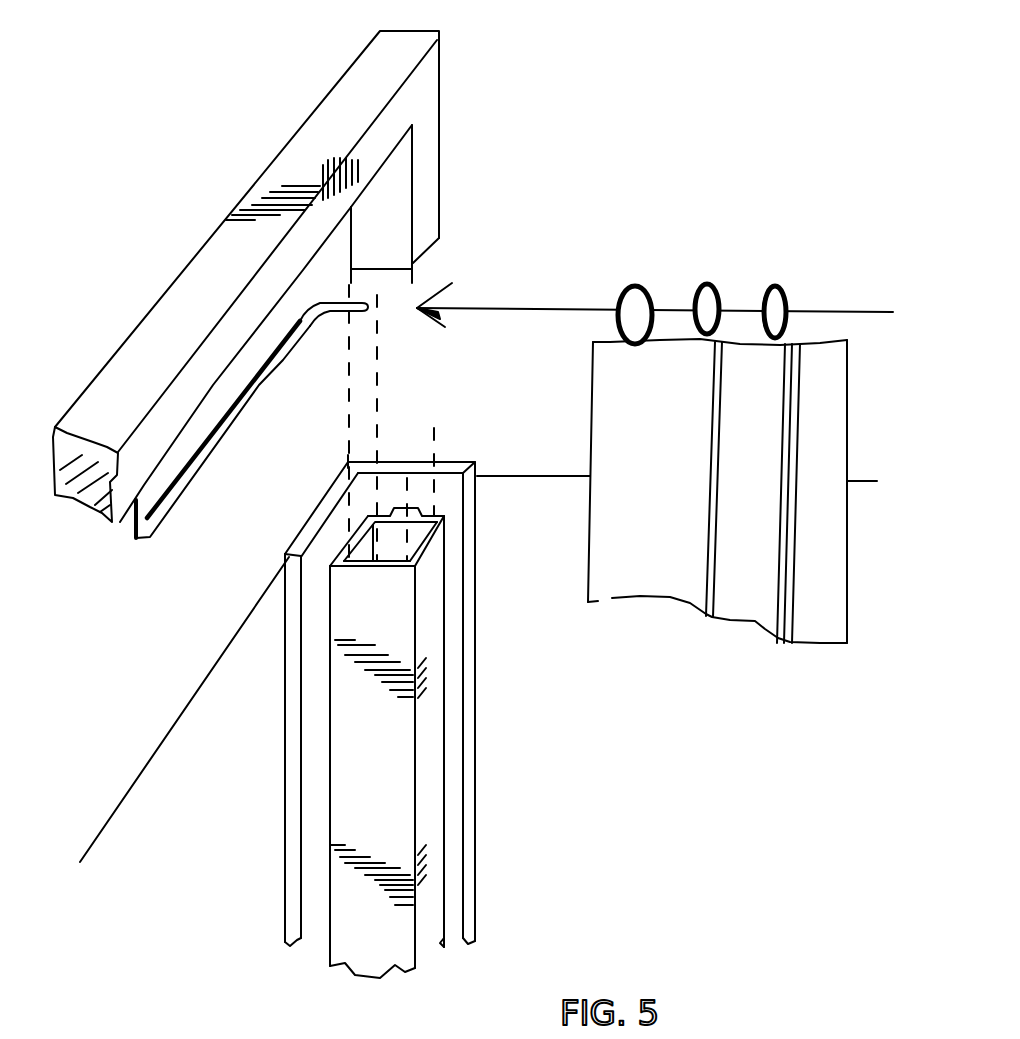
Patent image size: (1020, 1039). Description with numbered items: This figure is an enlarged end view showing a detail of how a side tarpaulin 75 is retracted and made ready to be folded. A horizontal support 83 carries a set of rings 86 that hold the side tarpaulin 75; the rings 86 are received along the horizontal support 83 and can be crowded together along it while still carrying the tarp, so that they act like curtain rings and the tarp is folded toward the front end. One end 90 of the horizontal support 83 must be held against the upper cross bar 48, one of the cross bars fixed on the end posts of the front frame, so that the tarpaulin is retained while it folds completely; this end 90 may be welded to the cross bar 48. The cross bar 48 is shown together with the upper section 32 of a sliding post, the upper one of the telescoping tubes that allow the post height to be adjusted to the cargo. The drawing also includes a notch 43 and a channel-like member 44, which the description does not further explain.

The upper cross bar 48 is at (220, 215).
The notch 43 is at (433, 140).
The rings 86 is at (617, 290).
The horizontal support 83 is at (370, 314).
The end of the support 90 is at (133, 543).
The channel 44 is at (472, 646).
The upper section 32 is at (428, 782).
The side tarpaulin 75 is at (815, 628).